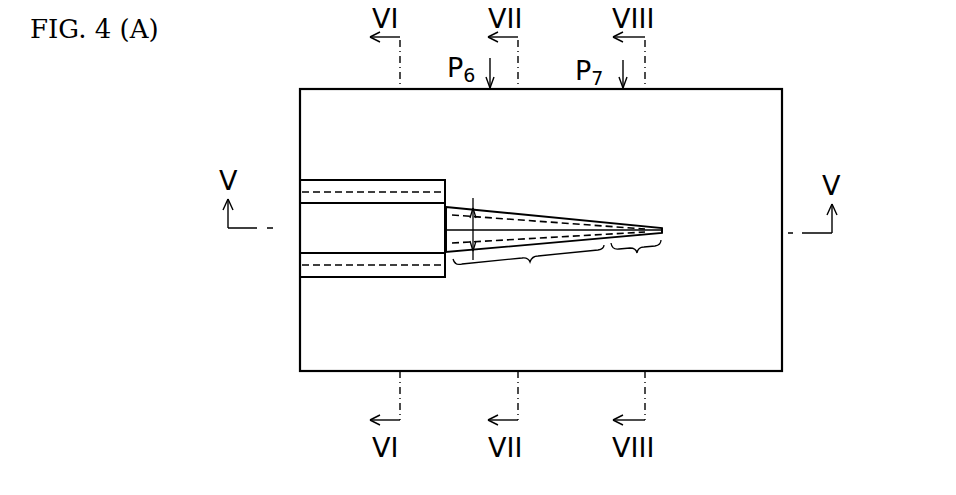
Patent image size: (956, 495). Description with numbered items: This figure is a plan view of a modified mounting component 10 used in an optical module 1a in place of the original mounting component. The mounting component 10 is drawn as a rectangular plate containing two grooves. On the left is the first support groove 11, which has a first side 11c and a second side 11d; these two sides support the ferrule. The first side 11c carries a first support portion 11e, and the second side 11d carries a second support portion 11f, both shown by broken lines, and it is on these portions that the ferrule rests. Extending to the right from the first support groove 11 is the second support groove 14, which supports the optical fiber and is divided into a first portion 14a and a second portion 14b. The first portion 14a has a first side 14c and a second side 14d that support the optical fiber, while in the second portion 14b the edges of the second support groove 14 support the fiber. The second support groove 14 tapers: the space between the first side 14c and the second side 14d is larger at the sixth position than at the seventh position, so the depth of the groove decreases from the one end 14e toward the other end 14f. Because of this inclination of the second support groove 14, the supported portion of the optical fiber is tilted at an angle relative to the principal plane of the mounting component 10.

The optical module 1a is at (786, 68).
The mounting component 10 is at (300, 325).
The first support groove 11 is at (405, 180).
The first side 11c is at (318, 190).
The second side 11d is at (333, 267).
The first support portion 11e is at (370, 192).
The second support portion 11f is at (395, 265).
The second support groove 14 is at (502, 210).
The first portion 14a is at (528, 270).
The second portion 14b is at (640, 264).
The first side 14c is at (518, 221).
The second side 14d is at (520, 243).
The one end 14e is at (447, 250).
The other end 14f is at (663, 232).